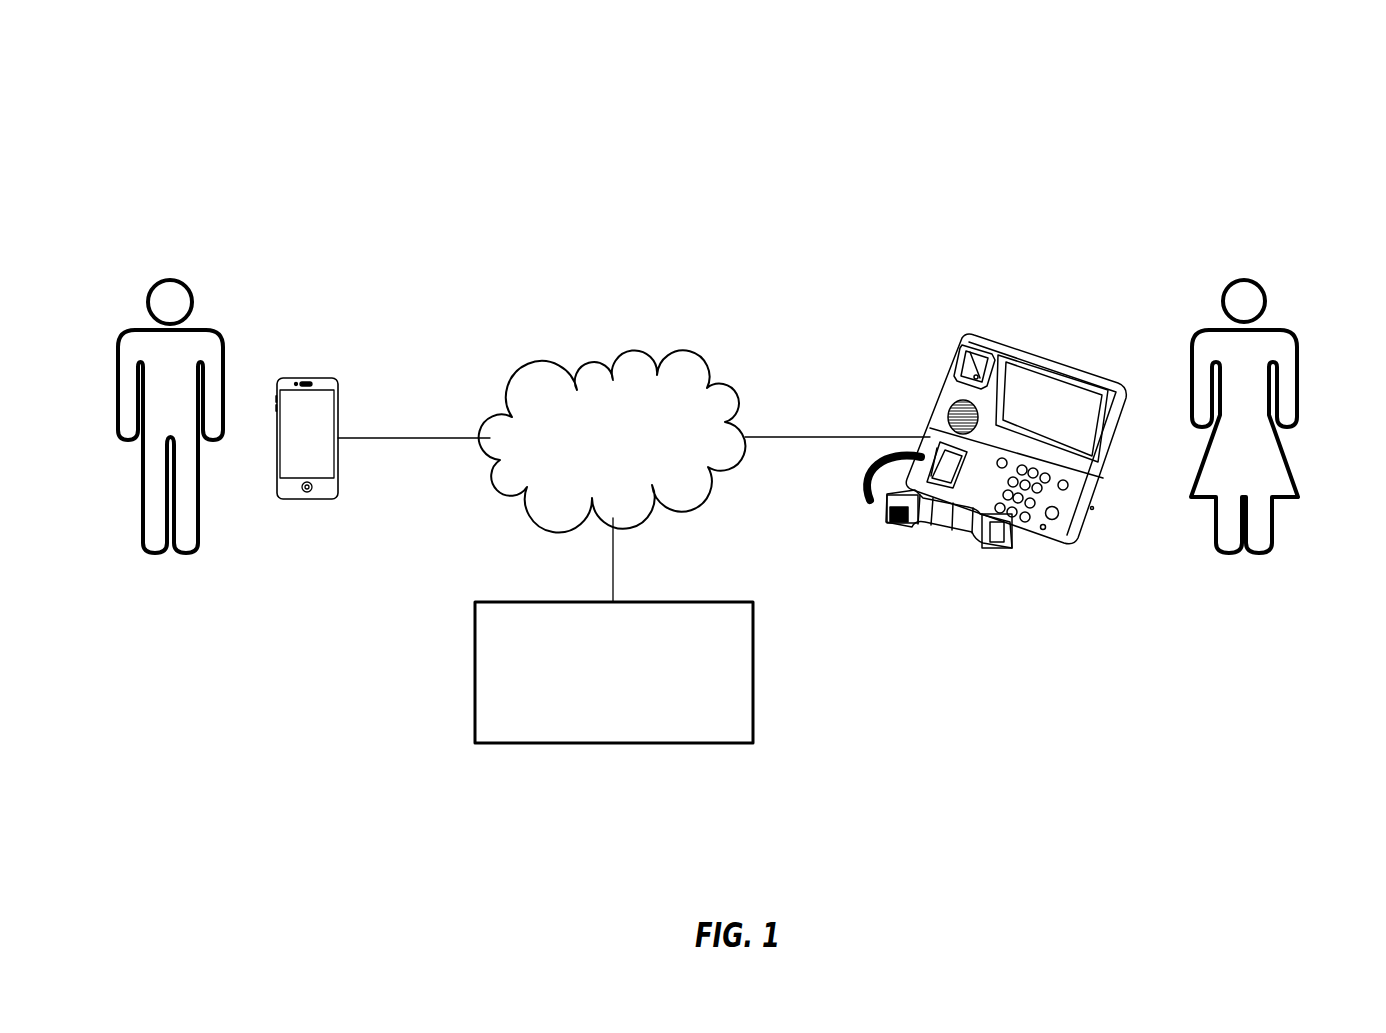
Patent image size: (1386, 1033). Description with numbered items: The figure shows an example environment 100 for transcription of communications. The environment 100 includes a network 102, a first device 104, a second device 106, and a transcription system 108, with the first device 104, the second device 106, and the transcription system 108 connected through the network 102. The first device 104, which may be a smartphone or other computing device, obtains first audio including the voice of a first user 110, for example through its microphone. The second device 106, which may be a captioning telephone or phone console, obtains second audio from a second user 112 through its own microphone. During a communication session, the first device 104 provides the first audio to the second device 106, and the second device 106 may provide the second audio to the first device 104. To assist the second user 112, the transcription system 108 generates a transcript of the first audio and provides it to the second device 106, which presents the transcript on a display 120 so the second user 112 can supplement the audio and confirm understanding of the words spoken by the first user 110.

The environment 100 is at (1112, 70).
The network 102 is at (628, 466).
The first device 104 is at (302, 377).
The second device 106 is at (955, 362).
The transcription system 108 is at (630, 697).
The first user 110 is at (188, 290).
The second user 112 is at (1267, 290).
The display 120 is at (1043, 383).